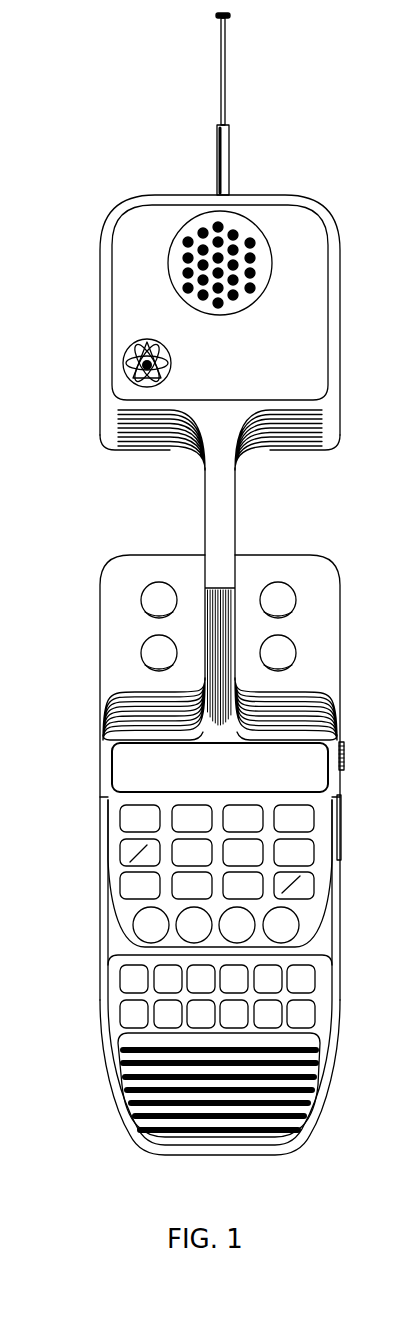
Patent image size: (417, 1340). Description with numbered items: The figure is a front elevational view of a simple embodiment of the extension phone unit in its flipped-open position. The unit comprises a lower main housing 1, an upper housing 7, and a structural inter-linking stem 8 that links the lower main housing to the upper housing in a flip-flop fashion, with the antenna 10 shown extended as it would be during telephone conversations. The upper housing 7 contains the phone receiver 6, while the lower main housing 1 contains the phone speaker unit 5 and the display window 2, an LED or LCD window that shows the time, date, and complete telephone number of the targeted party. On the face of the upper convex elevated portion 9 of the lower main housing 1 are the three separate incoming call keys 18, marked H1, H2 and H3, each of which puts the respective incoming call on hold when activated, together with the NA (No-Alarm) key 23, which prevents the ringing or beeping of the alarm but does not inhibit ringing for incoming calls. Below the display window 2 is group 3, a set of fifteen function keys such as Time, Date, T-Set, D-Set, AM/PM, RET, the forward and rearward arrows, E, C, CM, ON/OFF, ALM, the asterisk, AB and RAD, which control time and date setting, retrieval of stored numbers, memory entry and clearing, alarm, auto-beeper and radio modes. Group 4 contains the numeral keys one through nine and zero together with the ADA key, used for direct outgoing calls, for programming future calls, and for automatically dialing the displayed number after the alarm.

The lower main housing 1 is at (100, 722).
The display window 2 is at (341, 752).
The group of function keys 3 is at (318, 805).
The group of number keys 4 is at (320, 967).
The phone speaker unit 5 is at (128, 1070).
The phone receiver 6 is at (175, 260).
The upper housing 7 is at (310, 356).
The structural inter-linking stem 8 is at (225, 515).
The upper convex elevated portion 9 is at (328, 643).
The antenna 10 is at (218, 100).
The incoming call keys 18 is at (142, 598).
The NA key 23 is at (297, 655).